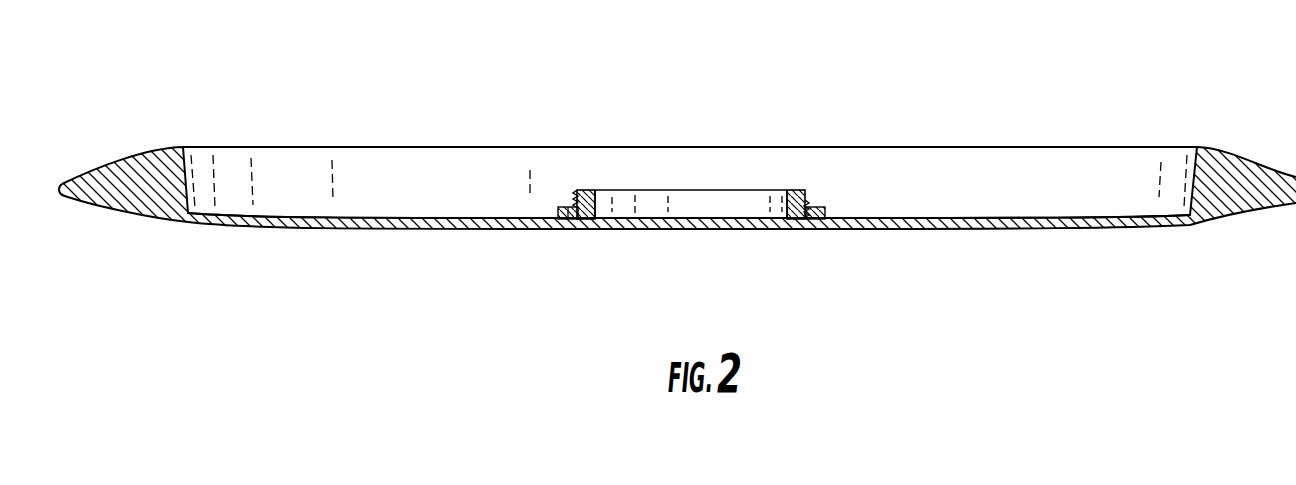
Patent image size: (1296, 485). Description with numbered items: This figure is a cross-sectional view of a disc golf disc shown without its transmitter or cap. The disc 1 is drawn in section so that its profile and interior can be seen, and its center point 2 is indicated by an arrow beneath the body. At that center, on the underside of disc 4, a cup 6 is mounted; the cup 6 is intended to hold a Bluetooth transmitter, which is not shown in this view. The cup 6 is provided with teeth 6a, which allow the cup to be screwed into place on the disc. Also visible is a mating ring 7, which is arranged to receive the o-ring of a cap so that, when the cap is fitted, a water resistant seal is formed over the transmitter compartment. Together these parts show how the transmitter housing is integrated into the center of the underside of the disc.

The disc 1 is at (157, 147).
The center point 2 is at (679, 232).
The underside of disc 4 is at (437, 217).
The cup 6 is at (591, 190).
The teeth 6a is at (804, 198).
The mating ring 7 is at (563, 207).